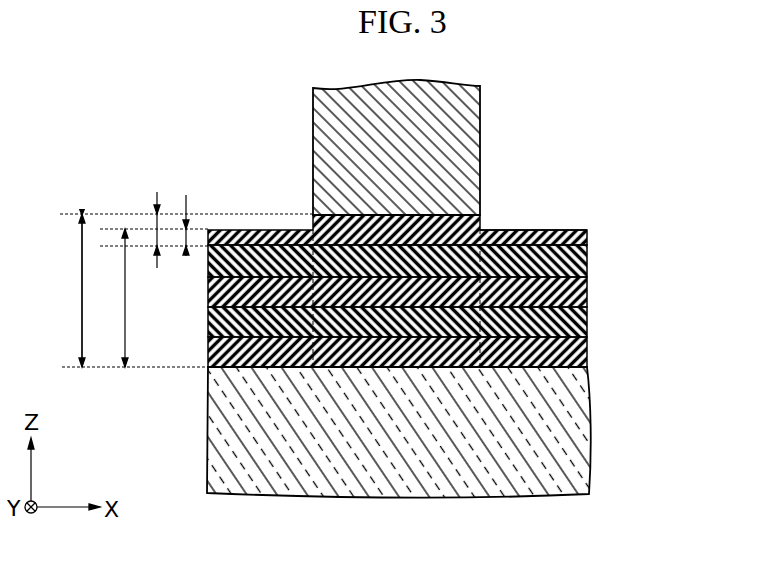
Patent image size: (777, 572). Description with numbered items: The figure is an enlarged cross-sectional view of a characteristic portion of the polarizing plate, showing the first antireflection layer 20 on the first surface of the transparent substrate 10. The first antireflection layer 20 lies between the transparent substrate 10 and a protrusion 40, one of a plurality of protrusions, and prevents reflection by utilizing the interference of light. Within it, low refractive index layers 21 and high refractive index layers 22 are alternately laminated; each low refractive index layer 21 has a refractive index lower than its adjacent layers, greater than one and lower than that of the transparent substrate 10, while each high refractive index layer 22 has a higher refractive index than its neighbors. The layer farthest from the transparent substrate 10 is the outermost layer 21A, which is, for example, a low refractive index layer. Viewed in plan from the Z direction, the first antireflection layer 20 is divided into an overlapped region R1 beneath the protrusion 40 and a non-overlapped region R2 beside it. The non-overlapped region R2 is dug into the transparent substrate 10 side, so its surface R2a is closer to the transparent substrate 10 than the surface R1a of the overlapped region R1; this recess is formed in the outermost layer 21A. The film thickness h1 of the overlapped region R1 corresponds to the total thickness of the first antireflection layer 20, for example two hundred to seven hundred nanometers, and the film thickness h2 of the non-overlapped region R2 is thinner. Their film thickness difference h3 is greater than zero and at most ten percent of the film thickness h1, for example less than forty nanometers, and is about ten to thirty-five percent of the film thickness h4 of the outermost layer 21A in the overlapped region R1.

The transparent substrate 10 is at (586, 421).
The first antireflection layer 20 is at (487, 293).
The low refractive index layer 21 is at (586, 292).
The high refractive index layer 22 is at (586, 262).
The outermost layer 21A is at (463, 226).
The protrusion 40 is at (490, 120).
The overlapped region R1 is at (385, 372).
The non-overlapped region R2 is at (257, 372).
The surface of the overlapped region R1a is at (454, 216).
The surface of the non-overlapped region R2a is at (562, 231).
The film thickness of the overlapped region h1 is at (67, 290).
The film thickness of the non-overlapped region h2 is at (110, 298).
The film thickness difference h3 is at (188, 221).
The film thickness of the outermost layer h4 is at (155, 221).